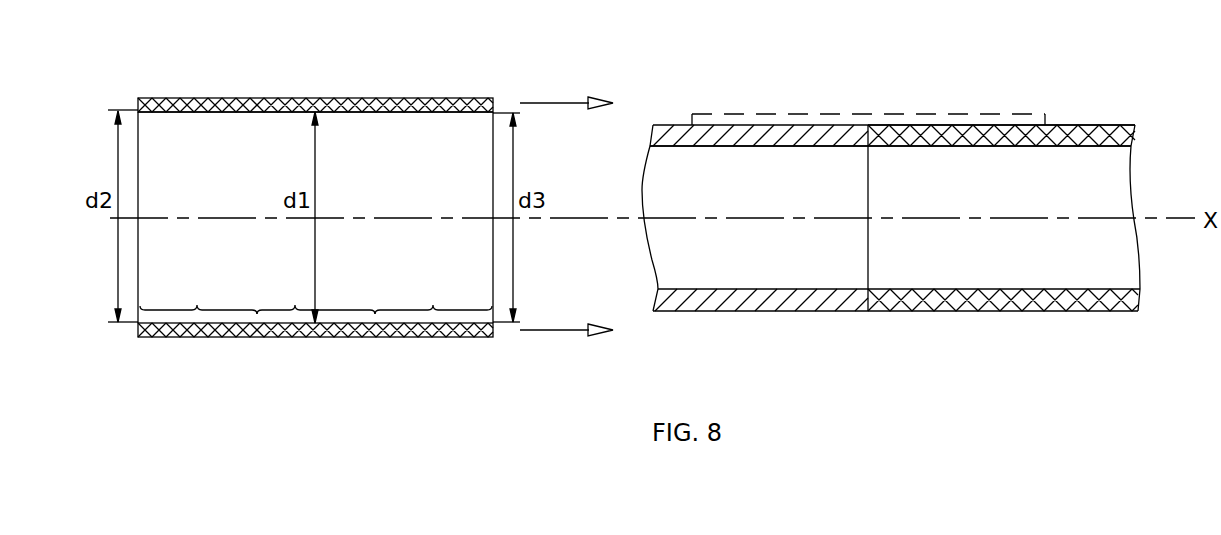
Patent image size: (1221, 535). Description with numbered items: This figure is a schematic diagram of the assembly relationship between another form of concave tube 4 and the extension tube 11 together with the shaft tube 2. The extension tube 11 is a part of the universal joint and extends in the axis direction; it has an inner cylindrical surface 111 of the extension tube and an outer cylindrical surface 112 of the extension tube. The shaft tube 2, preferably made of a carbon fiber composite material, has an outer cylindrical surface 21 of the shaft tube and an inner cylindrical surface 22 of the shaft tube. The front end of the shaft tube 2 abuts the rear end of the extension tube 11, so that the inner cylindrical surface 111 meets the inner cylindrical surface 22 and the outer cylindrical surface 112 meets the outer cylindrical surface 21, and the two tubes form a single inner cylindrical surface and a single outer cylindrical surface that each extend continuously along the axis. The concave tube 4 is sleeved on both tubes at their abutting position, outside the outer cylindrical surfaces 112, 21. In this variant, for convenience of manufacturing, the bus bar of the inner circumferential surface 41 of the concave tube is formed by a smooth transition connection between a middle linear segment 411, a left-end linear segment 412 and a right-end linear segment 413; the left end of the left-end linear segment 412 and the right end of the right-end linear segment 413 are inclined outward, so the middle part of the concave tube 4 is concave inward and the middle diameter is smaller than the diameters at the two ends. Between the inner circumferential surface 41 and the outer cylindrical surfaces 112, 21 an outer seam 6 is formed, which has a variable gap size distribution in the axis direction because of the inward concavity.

The concave tube 4 is at (197, 98).
The inner circumferential surface of the concave tube 41 is at (235, 124).
The middle linear segment 411 is at (316, 297).
The left-end linear segment 412 is at (198, 297).
The right-end linear segment 413 is at (433, 297).
The extension tube 11 is at (792, 135).
The inner cylindrical surface of the extension tube 111 is at (662, 158).
The outer cylindrical surface of the extension tube 112 is at (665, 115).
The shaft tube 2 is at (1013, 128).
The outer cylindrical surface of the shaft tube 21 is at (1096, 115).
The inner cylindrical surface of the shaft tube 22 is at (1123, 158).
The outer seam 6 is at (940, 114).